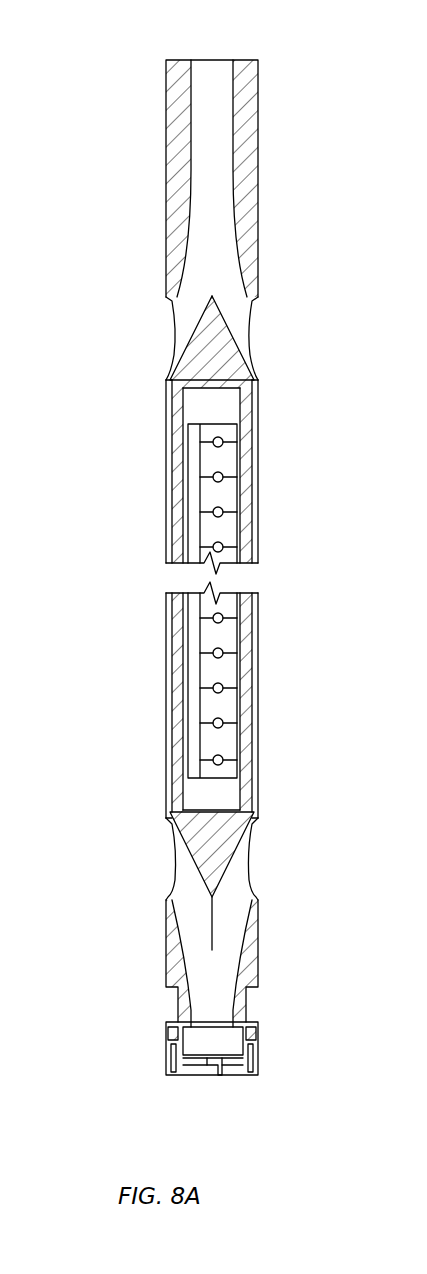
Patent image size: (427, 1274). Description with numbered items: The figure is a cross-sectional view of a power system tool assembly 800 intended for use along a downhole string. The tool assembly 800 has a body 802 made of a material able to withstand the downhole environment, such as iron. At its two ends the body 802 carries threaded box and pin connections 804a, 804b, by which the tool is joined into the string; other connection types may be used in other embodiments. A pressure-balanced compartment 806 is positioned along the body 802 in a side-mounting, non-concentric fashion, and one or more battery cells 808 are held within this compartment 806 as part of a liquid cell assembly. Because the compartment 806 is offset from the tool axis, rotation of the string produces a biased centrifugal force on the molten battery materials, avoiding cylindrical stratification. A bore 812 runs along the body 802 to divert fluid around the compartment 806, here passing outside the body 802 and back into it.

The power system tool assembly 800 is at (131, 51).
The threaded pin connection 804b is at (260, 102).
The bore 812 is at (198, 283).
The pressure-balanced compartment 806 is at (195, 405).
The battery cells 808 is at (213, 547).
The body 802 is at (200, 858).
The threaded box connection 804a is at (258, 1036).